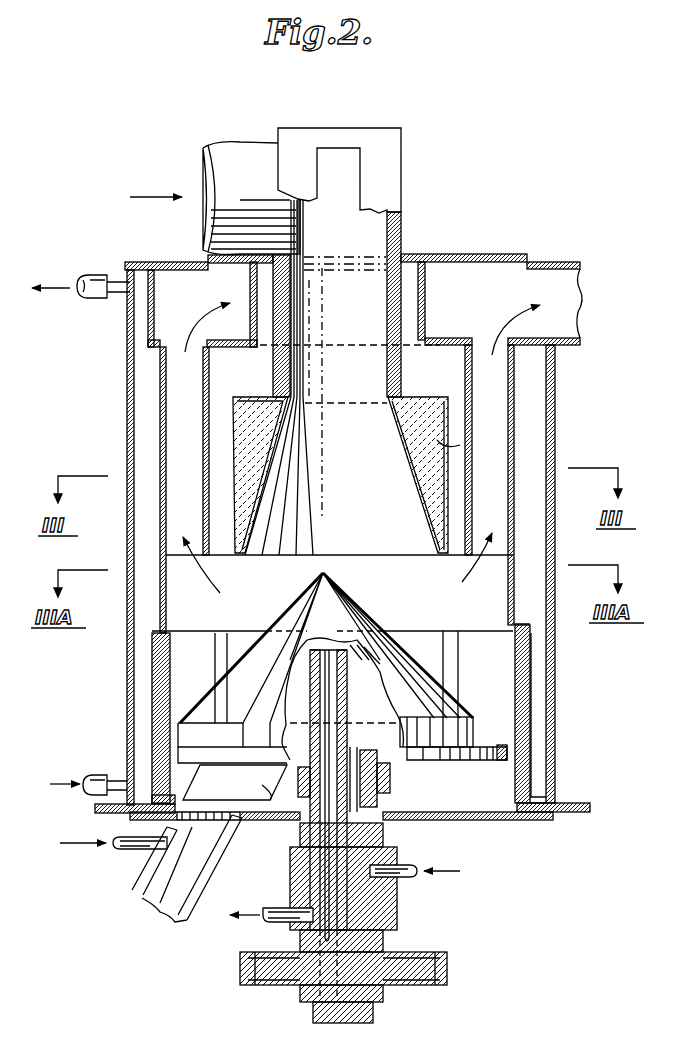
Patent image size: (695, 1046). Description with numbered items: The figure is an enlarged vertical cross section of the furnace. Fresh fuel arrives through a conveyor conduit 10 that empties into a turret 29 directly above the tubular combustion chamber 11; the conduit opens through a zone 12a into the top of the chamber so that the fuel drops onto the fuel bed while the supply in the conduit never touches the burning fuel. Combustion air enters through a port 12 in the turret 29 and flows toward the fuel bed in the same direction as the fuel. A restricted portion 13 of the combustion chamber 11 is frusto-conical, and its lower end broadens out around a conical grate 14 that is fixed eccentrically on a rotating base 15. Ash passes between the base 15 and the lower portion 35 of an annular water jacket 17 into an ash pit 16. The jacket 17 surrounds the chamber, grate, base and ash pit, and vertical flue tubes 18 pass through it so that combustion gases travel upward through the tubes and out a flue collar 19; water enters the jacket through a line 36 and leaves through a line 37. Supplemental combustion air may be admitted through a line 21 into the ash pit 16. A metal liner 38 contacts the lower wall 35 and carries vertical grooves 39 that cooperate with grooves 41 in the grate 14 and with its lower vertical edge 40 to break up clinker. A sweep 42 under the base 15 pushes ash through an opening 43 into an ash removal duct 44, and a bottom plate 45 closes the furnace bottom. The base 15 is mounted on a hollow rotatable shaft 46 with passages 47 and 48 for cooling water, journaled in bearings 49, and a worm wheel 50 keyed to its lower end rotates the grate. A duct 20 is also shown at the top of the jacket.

The conveyor conduit 10 is at (243, 153).
The tubular combustion chamber 11 is at (268, 579).
The port 12 is at (350, 182).
The zone 12a is at (342, 336).
The restricted portion 13 is at (398, 455).
The conical grate 14 is at (358, 622).
The rotating base 15 is at (510, 752).
The ash pit 16 is at (465, 802).
The annular boiler or water jacket 17 is at (127, 398).
The flue tubes 18 is at (185, 427).
The flue collar 19 is at (170, 313).
The inlet duct 20 is at (568, 288).
The line 21 is at (140, 856).
The turret 29 is at (385, 140).
The lower portion of jacket 35 is at (517, 573).
The line 36 is at (95, 780).
The line 37 is at (92, 283).
The metal liner 38 is at (523, 773).
The vertical grooves 39 is at (165, 657).
The lower vertical edge 40 is at (455, 728).
The grooves 41 is at (273, 703).
The sweep 42 is at (258, 818).
The opening 43 is at (275, 800).
The ash removal duct 44 is at (160, 880).
The bottom plate 45 is at (495, 812).
The hollow rotatable shaft 46 is at (320, 1005).
The passage 47 is at (382, 878).
The passage 48 is at (300, 883).
The bearings 49 is at (398, 905).
The worm wheel 50 is at (440, 963).